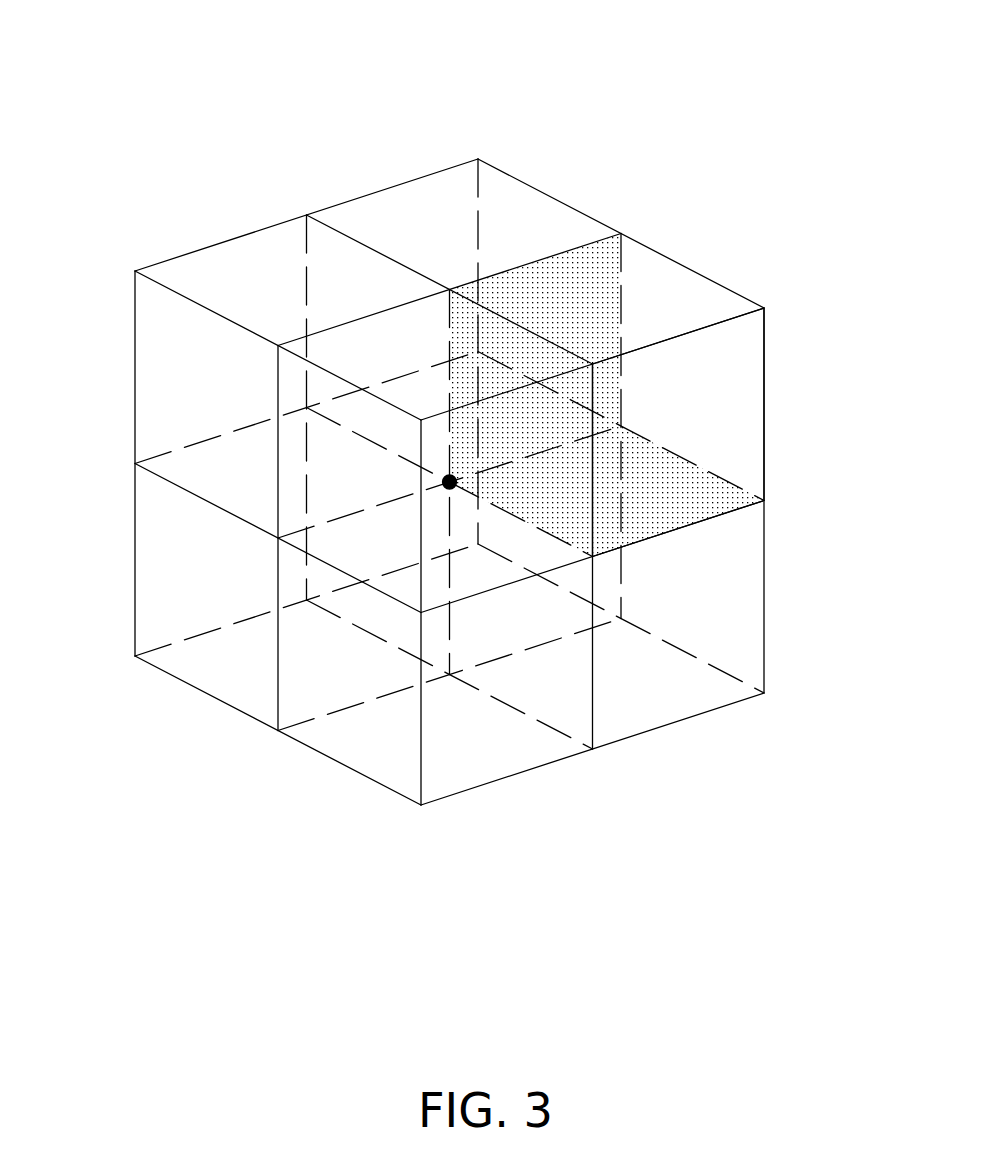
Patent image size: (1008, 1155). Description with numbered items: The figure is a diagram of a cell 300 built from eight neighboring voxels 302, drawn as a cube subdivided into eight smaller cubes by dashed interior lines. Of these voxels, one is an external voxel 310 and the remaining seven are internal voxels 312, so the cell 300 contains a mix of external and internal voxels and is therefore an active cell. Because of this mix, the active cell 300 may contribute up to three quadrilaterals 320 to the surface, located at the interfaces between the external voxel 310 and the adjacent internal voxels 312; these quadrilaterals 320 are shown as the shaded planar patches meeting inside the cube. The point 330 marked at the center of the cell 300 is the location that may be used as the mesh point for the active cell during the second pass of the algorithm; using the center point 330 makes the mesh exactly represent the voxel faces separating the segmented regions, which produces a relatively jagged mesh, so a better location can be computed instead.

The cell 300 is at (292, 104).
The neighboring voxels 302 is at (458, 770).
The external voxel 310 is at (727, 412).
The internal voxels 312 is at (532, 222).
The quadrilaterals 320 is at (603, 307).
The point 330 is at (448, 478).